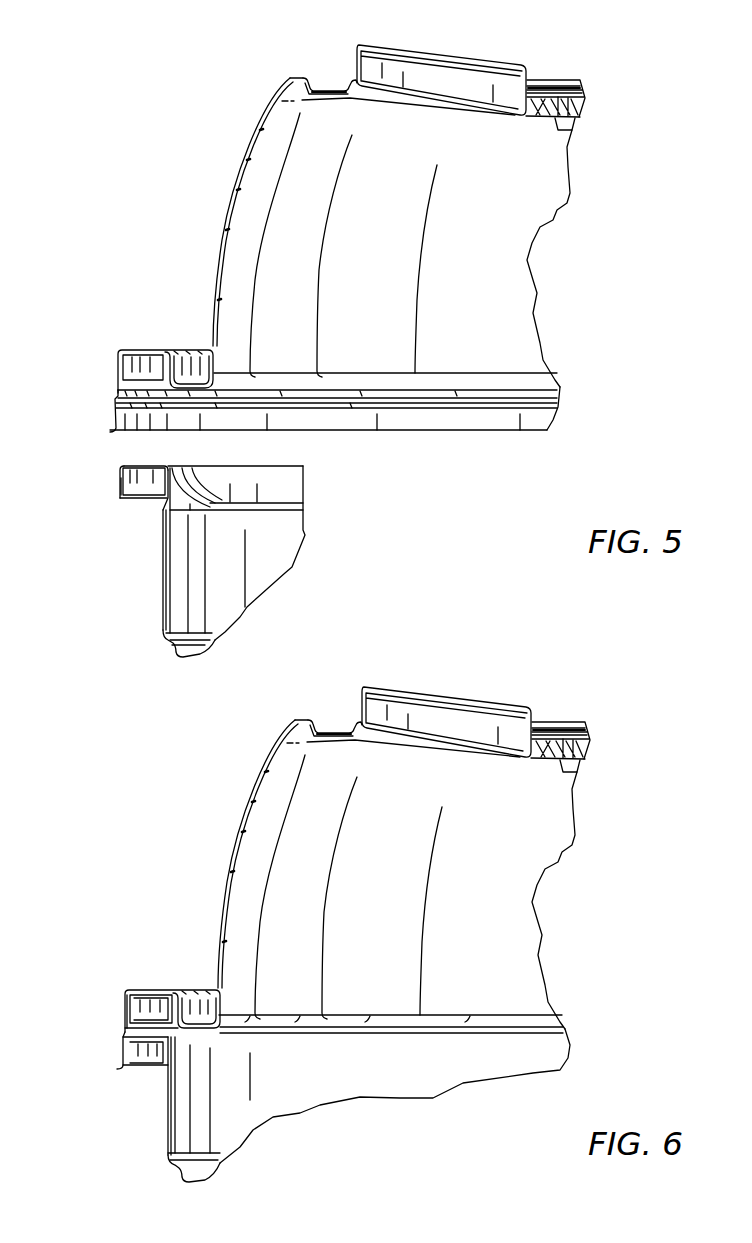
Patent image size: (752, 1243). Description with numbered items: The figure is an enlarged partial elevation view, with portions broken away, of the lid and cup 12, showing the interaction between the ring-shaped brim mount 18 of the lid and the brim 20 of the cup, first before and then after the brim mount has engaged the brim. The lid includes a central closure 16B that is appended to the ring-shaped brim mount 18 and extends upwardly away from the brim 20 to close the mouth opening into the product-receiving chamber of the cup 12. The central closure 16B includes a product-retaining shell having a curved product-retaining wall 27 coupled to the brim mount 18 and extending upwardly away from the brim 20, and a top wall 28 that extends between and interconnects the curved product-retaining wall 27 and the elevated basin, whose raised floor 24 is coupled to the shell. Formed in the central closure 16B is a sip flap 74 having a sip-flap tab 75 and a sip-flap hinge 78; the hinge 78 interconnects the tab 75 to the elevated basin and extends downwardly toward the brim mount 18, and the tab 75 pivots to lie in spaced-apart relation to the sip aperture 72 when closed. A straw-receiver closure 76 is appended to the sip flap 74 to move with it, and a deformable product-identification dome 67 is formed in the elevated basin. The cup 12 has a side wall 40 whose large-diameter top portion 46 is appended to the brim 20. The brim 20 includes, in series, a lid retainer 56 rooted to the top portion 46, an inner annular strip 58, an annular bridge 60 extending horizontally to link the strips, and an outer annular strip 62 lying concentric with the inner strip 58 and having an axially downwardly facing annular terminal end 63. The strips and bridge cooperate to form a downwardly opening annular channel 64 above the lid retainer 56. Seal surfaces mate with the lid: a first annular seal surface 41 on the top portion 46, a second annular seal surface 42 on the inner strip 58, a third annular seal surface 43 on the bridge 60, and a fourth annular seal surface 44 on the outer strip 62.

In FIG. 5, the cup 12 is at (317, 542).
In FIG. 6, the cup 12 is at (332, 1110).
In FIG. 5, the central closure 16B is at (190, 124).
In FIG. 6, the central closure 16B is at (373, 842).
In FIG. 5, the ring-shaped brim mount 18 is at (125, 329).
In FIG. 6, the ring-shaped brim mount 18 is at (126, 976).
In FIG. 5, the brim 20 is at (110, 523).
In FIG. 6, the brim 20 is at (128, 1106).
In FIG. 5, the raised floor 24 is at (578, 122).
In FIG. 6, the raised floor 24 is at (587, 754).
In FIG. 5, the curved product-retaining wall 27 is at (222, 208).
In FIG. 5, the top wall 28 is at (278, 73).
In FIG. 5, the side wall 40 is at (154, 646).
In FIG. 6, the side wall 40 is at (166, 1185).
In FIG. 5, the first annular seal surface 41 is at (173, 492).
In FIG. 6, the first annular seal surface 41 is at (174, 1037).
In FIG. 5, the second annular seal surface 42 is at (167, 538).
In FIG. 6, the second annular seal surface 42 is at (168, 1080).
In FIG. 5, the third annular seal surface 43 is at (145, 465).
In FIG. 5, the fourth annular seal surface 44 is at (118, 478).
In FIG. 5, the large-diameter top portion 46 is at (151, 540).
In FIG. 6, the large-diameter top portion 46 is at (141, 1173).
In FIG. 5, the lid retainer 56 is at (160, 512).
In FIG. 6, the lid retainer 56 is at (178, 1042).
In FIG. 5, the inner annular strip 58 is at (175, 482).
In FIG. 5, the annular bridge 60 is at (137, 464).
In FIG. 6, the annular bridge 60 is at (150, 990).
In FIG. 5, the outer annular strip 62 is at (120, 490).
In FIG. 6, the outer annular strip 62 is at (125, 1012).
In FIG. 5, the annular terminal end 63 is at (122, 500).
In FIG. 6, the annular terminal end 63 is at (125, 1031).
In FIG. 5, the annular channel 64 is at (138, 495).
In FIG. 6, the annular channel 64 is at (143, 1017).
In FIG. 5, the deformable product-identification dome 67 is at (557, 97).
In FIG. 6, the deformable product-identification dome 67 is at (565, 715).
In FIG. 5, the sip aperture 72 is at (300, 113).
In FIG. 6, the sip aperture 72 is at (390, 887).
In FIG. 5, the sip flap 74 is at (330, 64).
In FIG. 6, the sip flap 74 is at (403, 706).
In FIG. 5, the sip-flap tab 75 is at (328, 97).
In FIG. 6, the sip-flap tab 75 is at (334, 774).
In FIG. 5, the straw-receiver closure 76 is at (449, 55).
In FIG. 6, the straw-receiver closure 76 is at (446, 710).
In FIG. 5, the sip-flap hinge 78 is at (556, 126).
In FIG. 6, the sip-flap hinge 78 is at (546, 794).